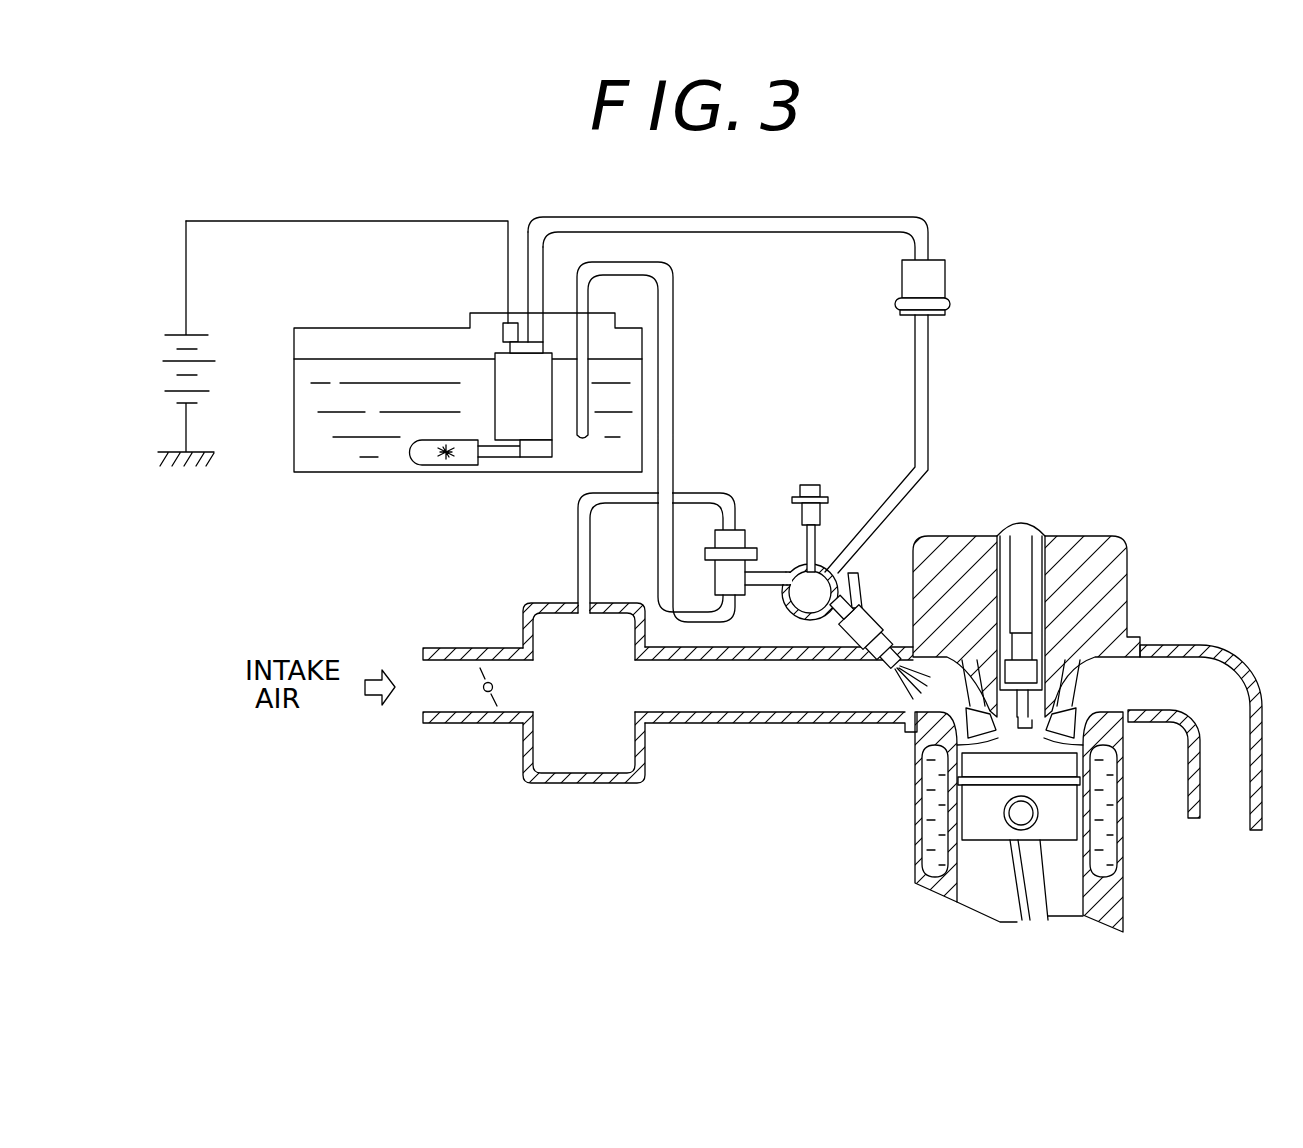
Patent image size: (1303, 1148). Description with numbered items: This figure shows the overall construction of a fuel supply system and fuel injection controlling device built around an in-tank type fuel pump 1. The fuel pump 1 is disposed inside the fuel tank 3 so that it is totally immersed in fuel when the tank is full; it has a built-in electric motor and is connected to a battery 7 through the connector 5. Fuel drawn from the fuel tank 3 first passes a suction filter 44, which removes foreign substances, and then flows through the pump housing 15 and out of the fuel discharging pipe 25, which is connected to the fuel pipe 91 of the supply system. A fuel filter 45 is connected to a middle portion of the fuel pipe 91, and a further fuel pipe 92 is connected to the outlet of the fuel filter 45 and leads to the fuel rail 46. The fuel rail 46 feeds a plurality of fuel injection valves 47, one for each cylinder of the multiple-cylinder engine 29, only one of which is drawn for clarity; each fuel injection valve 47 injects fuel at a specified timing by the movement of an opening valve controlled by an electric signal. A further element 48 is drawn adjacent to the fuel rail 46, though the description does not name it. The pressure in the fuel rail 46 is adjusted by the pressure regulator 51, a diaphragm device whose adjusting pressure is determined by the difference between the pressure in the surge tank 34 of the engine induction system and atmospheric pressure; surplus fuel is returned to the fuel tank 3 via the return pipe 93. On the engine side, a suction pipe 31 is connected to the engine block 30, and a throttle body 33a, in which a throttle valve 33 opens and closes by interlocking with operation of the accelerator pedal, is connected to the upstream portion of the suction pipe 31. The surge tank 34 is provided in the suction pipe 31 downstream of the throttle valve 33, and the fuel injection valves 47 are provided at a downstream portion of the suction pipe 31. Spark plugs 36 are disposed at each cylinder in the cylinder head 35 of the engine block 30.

The fuel pump 1 is at (543, 468).
The fuel tank 3 is at (308, 466).
The connector 5 is at (503, 333).
The battery 7 is at (152, 357).
The pump housing 15 is at (547, 412).
The fuel discharging pipe 25 is at (545, 330).
The engine 29 is at (1086, 492).
The engine block 30 is at (1140, 607).
The suction pipe 31 is at (729, 733).
The throttle valve 33 is at (472, 708).
The throttle body 33a is at (443, 648).
The surge tank 34 is at (586, 783).
The cylinder head 35 is at (1127, 548).
The spark plug 36 is at (907, 730).
The suction filter 44 is at (420, 456).
The fuel filter 45 is at (942, 276).
The fuel rail 46 is at (823, 570).
The fuel injection valve 47 is at (862, 617).
The air supply port 48 is at (821, 486).
The pressure regulator 51 is at (742, 530).
The fuel pipe 91 is at (712, 216).
The fuel pipe 92 is at (929, 373).
The return pipe 93 is at (674, 311).